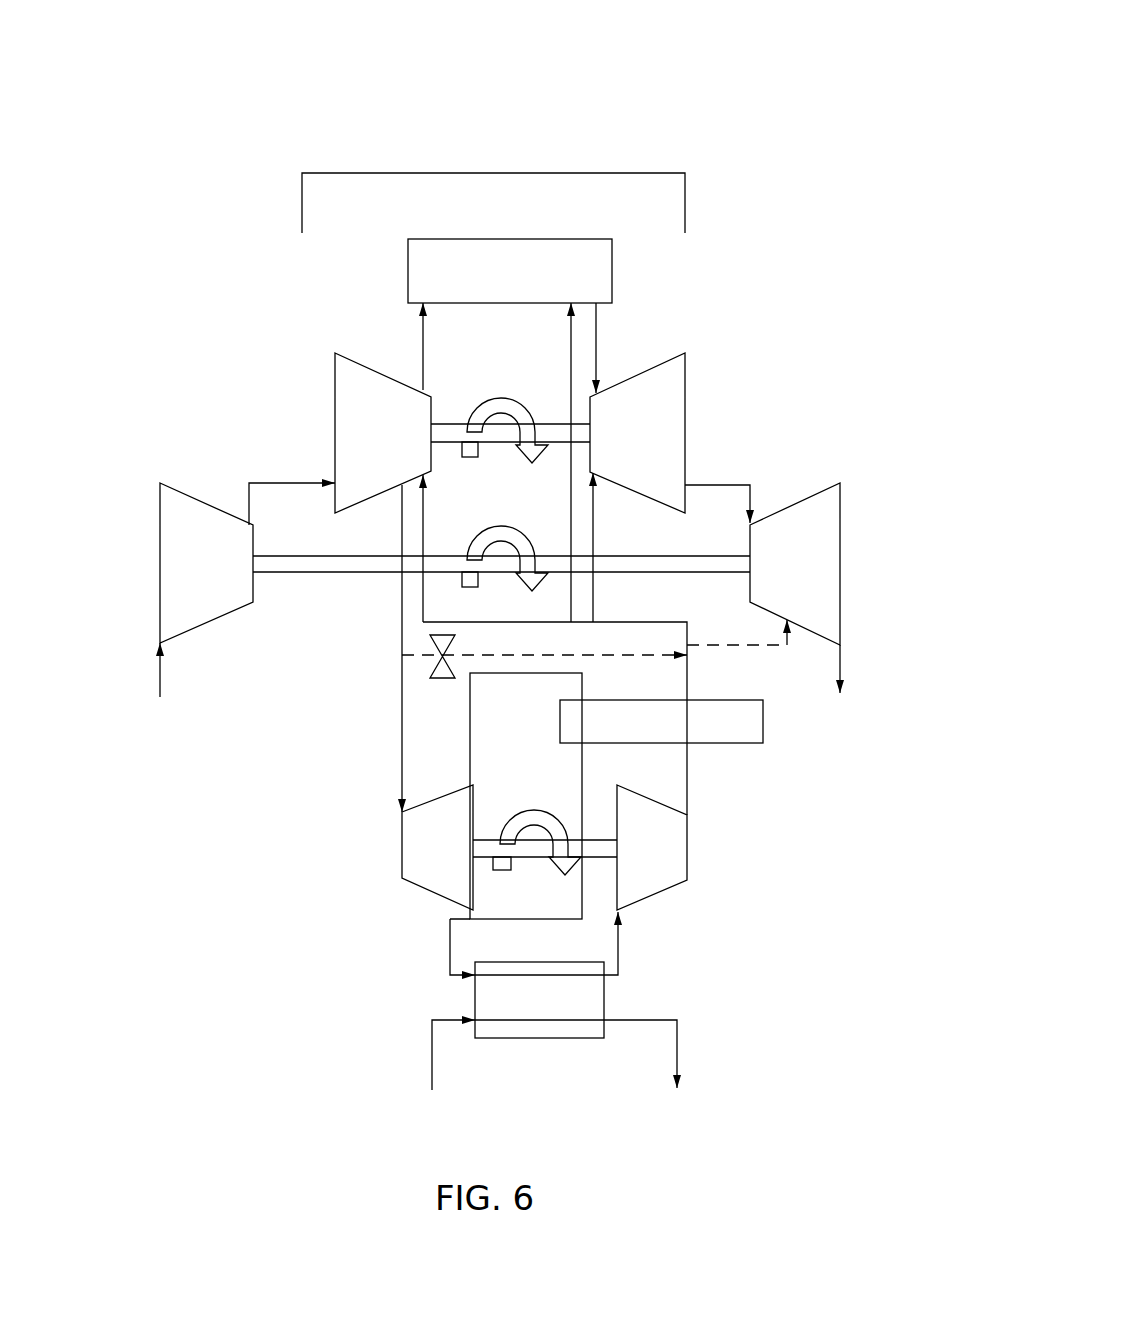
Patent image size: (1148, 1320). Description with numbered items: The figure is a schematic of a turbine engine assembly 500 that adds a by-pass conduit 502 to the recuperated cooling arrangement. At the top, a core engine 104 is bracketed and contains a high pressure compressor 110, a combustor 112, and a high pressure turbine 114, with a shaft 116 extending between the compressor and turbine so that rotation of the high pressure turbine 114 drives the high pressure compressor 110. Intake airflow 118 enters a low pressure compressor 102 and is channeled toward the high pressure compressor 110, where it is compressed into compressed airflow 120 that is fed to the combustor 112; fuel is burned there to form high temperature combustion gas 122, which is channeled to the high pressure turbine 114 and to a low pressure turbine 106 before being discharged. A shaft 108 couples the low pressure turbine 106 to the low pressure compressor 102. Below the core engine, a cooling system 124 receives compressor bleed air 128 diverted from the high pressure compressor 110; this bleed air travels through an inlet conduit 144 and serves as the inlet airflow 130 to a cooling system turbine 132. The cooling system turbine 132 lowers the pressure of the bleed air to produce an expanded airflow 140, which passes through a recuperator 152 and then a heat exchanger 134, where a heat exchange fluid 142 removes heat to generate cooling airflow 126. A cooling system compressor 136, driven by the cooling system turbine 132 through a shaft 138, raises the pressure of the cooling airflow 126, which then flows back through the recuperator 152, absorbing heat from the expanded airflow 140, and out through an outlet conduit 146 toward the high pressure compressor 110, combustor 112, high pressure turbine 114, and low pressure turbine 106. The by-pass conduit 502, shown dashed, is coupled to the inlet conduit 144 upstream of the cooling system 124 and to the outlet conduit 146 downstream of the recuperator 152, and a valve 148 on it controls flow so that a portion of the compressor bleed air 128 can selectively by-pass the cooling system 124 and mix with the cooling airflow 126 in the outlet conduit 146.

The turbine engine assembly 500 is at (723, 73).
The core engine 104 is at (370, 173).
The combustor 112 is at (612, 270).
The compressed airflow 120 is at (422, 333).
The high temperature combustion gas 122 is at (598, 330).
The shaft 116 is at (453, 424).
The high pressure compressor 110 is at (335, 432).
The high pressure turbine 114 is at (686, 400).
The low pressure compressor 102 is at (160, 562).
The intake airflow 118 is at (160, 676).
The low pressure turbine 106 is at (841, 562).
The shaft 108 is at (713, 556).
The compressor bleed air 128 is at (402, 590).
The inlet conduit 144 is at (402, 692).
The inlet airflow 130 is at (402, 757).
The cooling airflow 126 is at (687, 682).
The outlet conduit 146 is at (688, 777).
The valve 148 is at (433, 640).
The by-pass conduit 502 is at (608, 655).
The expanded airflow 140 is at (469, 758).
The recuperator 152 is at (764, 720).
The cooling system turbine 132 is at (402, 858).
The cooling system compressor 136 is at (688, 847).
The shaft 138 is at (492, 840).
The heat exchanger 134 is at (605, 998).
The heat exchange fluid 142 is at (677, 1053).
The cooling system 124 is at (700, 985).